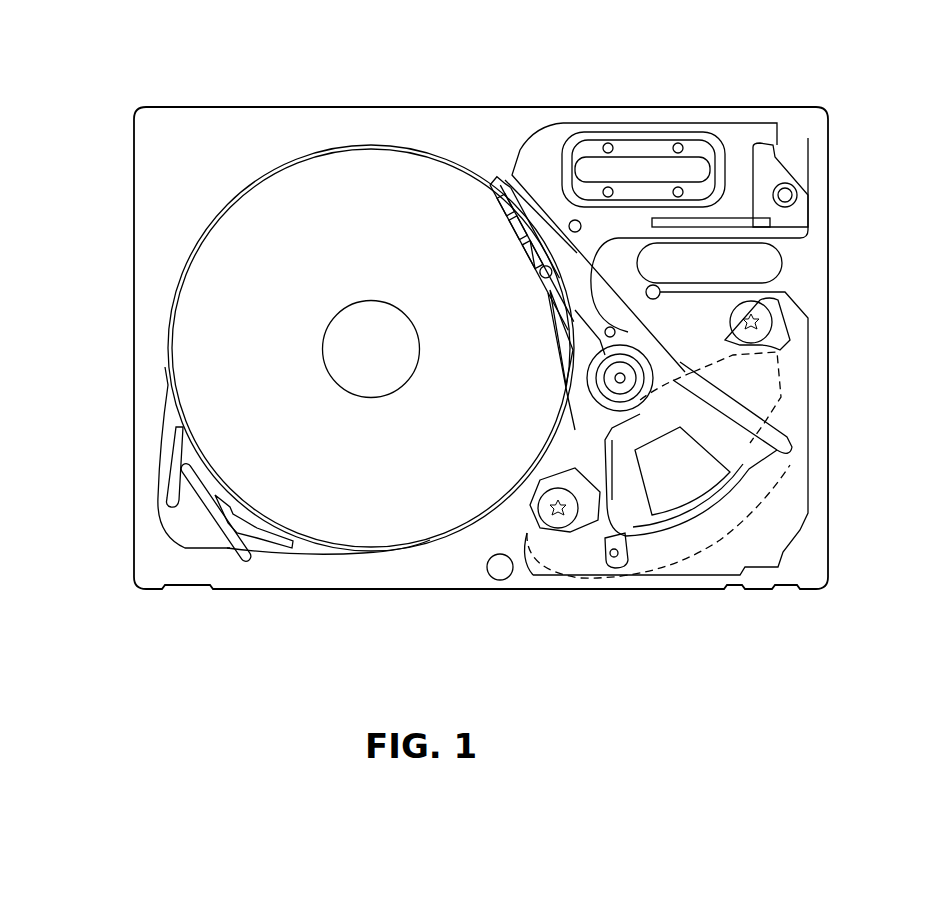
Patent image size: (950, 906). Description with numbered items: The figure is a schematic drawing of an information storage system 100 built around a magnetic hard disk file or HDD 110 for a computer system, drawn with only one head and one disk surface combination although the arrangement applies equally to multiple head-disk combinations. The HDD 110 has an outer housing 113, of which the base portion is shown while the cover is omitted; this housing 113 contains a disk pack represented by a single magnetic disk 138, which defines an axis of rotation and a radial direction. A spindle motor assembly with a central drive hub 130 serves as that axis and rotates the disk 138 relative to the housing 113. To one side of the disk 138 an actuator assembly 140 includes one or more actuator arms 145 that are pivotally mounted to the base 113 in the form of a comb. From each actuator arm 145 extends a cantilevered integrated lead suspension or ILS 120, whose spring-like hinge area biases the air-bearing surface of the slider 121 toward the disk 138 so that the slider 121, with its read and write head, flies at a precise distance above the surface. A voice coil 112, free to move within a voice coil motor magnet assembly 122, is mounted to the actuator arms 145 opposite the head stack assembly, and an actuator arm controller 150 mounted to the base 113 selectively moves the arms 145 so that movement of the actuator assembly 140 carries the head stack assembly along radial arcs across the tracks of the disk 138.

The hard disk drive 100 is at (76, 20).
The HDD 110 is at (241, 106).
The housing 113 is at (437, 107).
The slider 121 is at (500, 185).
The integrated lead suspension 120 is at (498, 240).
The magnetic disk 138 is at (369, 145).
The central drive hub 130 is at (392, 364).
The actuator arm 145 is at (548, 312).
The actuator assembly 140 is at (583, 400).
The voice coil 112 is at (617, 505).
The actuator arm controller 150 is at (758, 488).
The magnet 122 is at (708, 538).